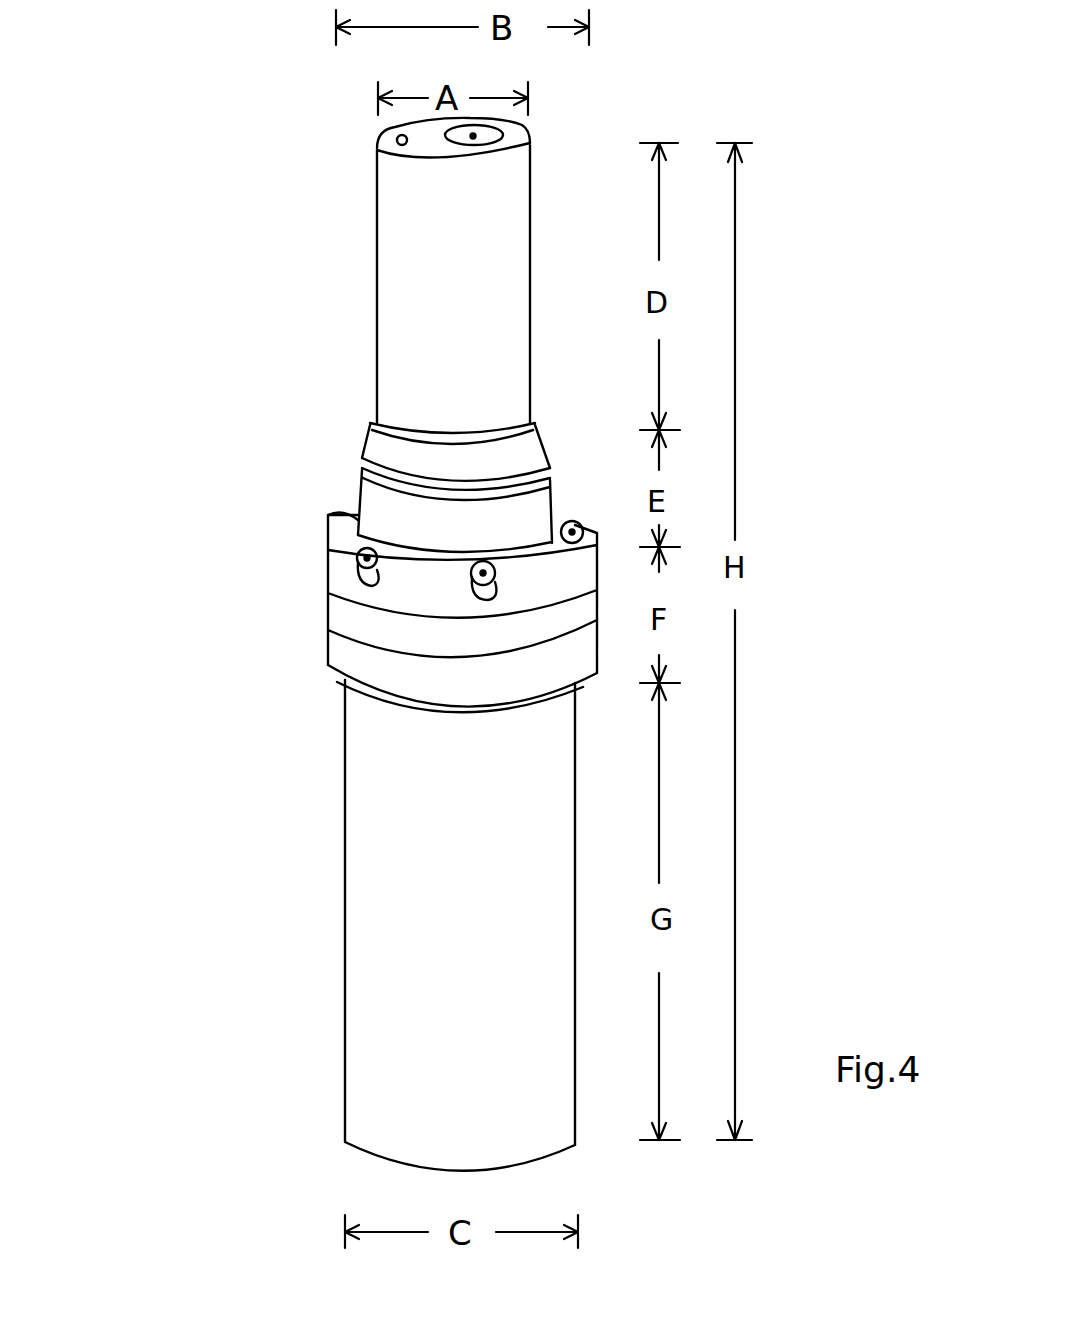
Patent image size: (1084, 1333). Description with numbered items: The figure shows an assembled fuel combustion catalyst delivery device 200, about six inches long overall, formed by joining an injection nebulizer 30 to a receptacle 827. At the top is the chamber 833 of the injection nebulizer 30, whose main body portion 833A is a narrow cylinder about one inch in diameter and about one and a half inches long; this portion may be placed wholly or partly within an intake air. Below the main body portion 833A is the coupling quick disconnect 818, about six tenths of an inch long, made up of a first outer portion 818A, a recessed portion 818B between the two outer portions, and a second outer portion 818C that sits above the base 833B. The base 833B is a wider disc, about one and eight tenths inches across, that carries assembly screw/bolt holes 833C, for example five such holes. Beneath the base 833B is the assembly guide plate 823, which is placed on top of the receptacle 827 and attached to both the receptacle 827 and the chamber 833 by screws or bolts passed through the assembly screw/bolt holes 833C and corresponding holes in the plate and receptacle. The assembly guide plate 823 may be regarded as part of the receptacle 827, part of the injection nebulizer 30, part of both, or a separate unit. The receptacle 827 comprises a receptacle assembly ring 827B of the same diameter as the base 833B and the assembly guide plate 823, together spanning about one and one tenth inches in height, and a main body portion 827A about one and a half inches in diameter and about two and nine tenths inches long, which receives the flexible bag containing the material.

The injection nebulizer 30 is at (262, 248).
The fuel combustion catalyst delivery device 200 is at (162, 1091).
The chamber 833 is at (547, 192).
The main body portion 833A is at (514, 280).
The base 833B is at (330, 547).
The assembly screw/bolt holes 833C is at (457, 599).
The coupling quick disconnect 818 is at (449, 487).
The first outer portion 818A is at (456, 452).
The recessed portion 818B is at (582, 455).
The second outer portion 818C is at (455, 511).
The assembly guide plate 823 is at (354, 626).
The receptacle 827 is at (334, 1157).
The main body portion 827A is at (354, 897).
The receptacle assembly ring 827B is at (378, 682).